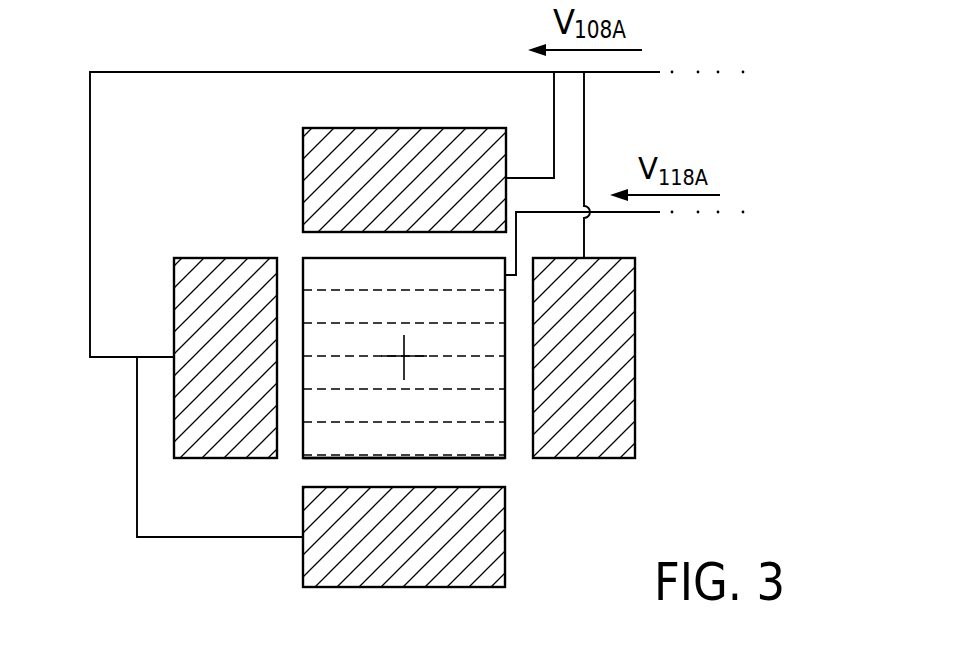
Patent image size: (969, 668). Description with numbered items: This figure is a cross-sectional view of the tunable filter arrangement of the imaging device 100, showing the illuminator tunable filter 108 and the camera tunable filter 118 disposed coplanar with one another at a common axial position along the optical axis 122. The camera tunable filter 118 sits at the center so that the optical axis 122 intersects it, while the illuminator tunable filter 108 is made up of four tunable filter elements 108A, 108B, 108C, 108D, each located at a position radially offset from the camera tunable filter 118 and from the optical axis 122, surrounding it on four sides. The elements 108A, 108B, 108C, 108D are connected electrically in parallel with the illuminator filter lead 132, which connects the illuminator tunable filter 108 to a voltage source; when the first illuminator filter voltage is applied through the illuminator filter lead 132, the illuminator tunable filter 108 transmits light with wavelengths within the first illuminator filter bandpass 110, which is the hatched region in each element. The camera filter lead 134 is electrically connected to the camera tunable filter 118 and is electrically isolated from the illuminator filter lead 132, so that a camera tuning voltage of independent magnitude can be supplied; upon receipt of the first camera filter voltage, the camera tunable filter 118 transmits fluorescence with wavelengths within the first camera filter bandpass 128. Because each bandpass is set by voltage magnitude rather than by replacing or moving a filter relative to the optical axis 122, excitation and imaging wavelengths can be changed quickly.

The imaging device 100 is at (74, 557).
The illuminator tunable filter 108 is at (252, 162).
The tunable filter element 108A is at (238, 258).
The tunable filter element 108B is at (427, 127).
The tunable filter element 108C is at (635, 393).
The tunable filter element 108D is at (477, 588).
The first illuminator filter bandpass 110 is at (426, 187).
The camera tunable filter 118 is at (482, 460).
The optical axis 122 is at (404, 358).
The first camera filter bandpass 128 is at (429, 310).
The illuminator filter lead 132 is at (638, 73).
The camera filter lead 134 is at (643, 213).